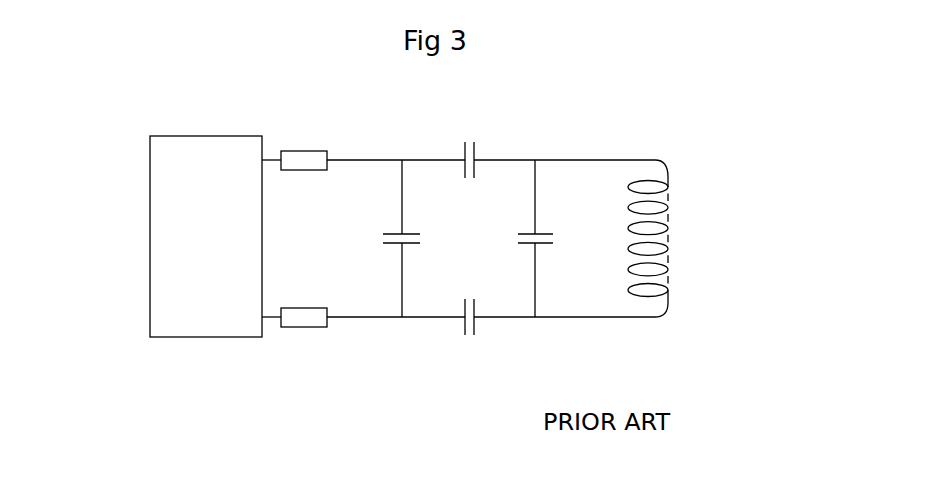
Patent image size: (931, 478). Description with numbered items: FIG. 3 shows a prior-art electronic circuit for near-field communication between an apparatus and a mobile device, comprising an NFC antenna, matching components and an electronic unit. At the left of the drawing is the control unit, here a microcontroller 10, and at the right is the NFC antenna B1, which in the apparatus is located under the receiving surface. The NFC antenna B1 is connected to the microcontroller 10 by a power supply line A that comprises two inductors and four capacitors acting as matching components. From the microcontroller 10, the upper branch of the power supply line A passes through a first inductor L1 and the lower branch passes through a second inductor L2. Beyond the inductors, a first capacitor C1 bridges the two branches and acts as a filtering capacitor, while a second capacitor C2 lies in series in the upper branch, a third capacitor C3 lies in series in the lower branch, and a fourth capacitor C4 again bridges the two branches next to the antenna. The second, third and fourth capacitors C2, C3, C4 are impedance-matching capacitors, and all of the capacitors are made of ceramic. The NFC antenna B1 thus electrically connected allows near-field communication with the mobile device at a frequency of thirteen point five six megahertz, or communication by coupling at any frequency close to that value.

The microcontroller 10 is at (150, 236).
The first inductor L1 is at (304, 149).
The second inductor L2 is at (304, 306).
The first capacitor C1 is at (389, 238).
The second capacitor C2 is at (468, 148).
The third capacitor C3 is at (468, 329).
The fourth capacitor C4 is at (551, 238).
The NFC antenna B1 is at (668, 208).
The power supply line A is at (372, 160).